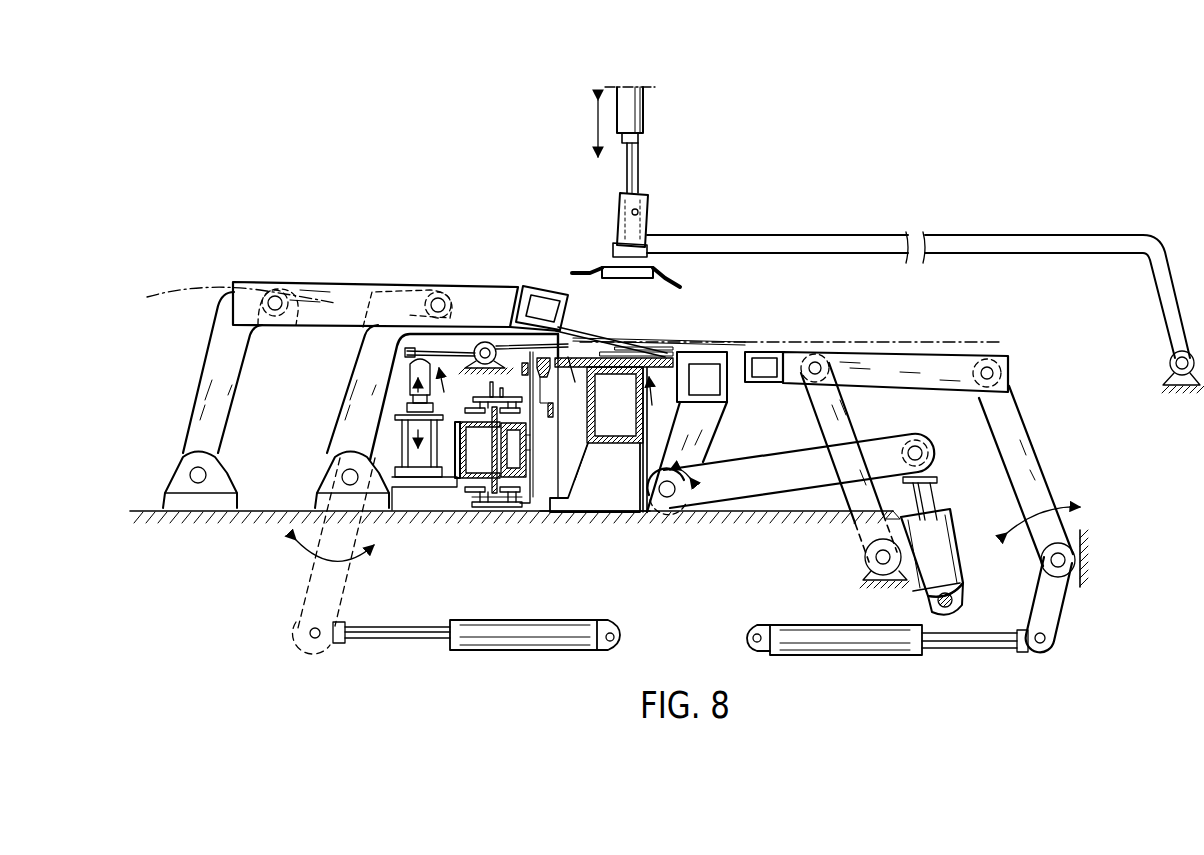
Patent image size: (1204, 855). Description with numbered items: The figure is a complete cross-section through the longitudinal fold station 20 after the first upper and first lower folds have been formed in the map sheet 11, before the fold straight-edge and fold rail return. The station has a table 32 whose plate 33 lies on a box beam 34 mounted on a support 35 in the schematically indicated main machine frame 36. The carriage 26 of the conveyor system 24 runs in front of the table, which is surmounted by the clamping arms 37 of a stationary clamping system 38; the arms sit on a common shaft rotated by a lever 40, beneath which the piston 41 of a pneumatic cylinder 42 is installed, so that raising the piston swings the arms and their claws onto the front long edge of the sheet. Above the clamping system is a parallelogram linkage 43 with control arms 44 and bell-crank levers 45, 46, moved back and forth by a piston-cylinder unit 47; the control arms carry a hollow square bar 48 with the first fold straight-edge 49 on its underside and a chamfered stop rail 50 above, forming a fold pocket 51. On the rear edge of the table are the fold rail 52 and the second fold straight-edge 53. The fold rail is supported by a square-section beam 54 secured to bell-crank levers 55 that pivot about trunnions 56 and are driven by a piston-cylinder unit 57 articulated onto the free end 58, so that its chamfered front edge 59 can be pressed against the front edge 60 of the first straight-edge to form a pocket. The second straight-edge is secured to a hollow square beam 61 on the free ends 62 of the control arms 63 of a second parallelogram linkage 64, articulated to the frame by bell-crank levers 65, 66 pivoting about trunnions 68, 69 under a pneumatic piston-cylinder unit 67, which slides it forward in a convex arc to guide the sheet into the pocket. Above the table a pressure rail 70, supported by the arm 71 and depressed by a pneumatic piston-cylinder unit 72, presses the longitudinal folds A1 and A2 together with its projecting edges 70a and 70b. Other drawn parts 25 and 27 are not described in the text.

The longitudinal fold station 20 is at (350, 133).
The parallelogram linkage 43 is at (330, 268).
The control arms 44 is at (360, 290).
The bell-crank lever 46 is at (217, 347).
The bell-crank lever 45 is at (363, 395).
The pneumatic cylinder 42 is at (402, 432).
The piston 41 is at (407, 370).
The stationary clamping system 38 is at (446, 391).
The lever 40 is at (400, 353).
The clamping arms 37 is at (498, 343).
The longitudinal fold A2 is at (513, 327).
The column 27 is at (547, 380).
The conveyor system 24 is at (493, 530).
The shaft 25 is at (453, 497).
The carriage 26 is at (520, 505).
The main machine frame 36 is at (600, 564).
The plate 33 is at (615, 405).
The support 35 is at (620, 484).
The box beam 34 is at (587, 438).
The table 32 is at (647, 400).
The longitudinal fold A1 is at (663, 392).
The hollow square bar 48 is at (522, 290).
The stop rail 50 is at (547, 310).
The fold pocket 51 is at (582, 328).
The first fold straight-edge 49 is at (625, 344).
The front edge 60 is at (643, 353).
The front edge 59 is at (673, 352).
The second fold straight-edge 53 is at (680, 343).
The map sheet 11 is at (903, 342).
The fold rail 52 is at (718, 360).
The square-section beam 54 is at (727, 395).
The bell-crank levers 55 is at (712, 443).
The trunnions 56 is at (665, 500).
The free end 58 is at (905, 440).
The hollow square beam 61 is at (770, 352).
The free ends 62 is at (795, 360).
The control arms 63 is at (960, 372).
The parallelogram linkage 64 is at (1012, 330).
The bell-crank lever 65 is at (850, 420).
The trunnion 68 is at (878, 557).
The bell-crank lever 66 is at (1030, 436).
The trunnion 69 is at (1050, 562).
The piston-cylinder unit 57 is at (940, 502).
The pneumatic piston-cylinder unit 67 is at (910, 660).
The piston-cylinder unit 47 is at (478, 652).
The pressure rail 70 is at (618, 278).
The projecting edge 70b is at (580, 270).
The projecting edge 70a is at (672, 282).
The pneumatic piston-cylinder unit 72 is at (654, 136).
The arm 71 is at (800, 240).